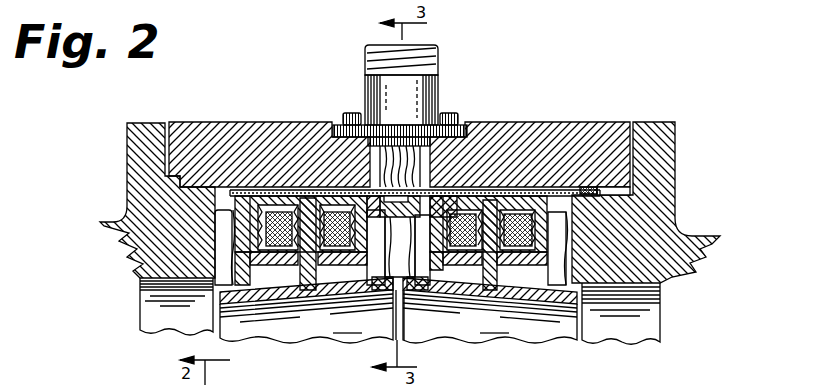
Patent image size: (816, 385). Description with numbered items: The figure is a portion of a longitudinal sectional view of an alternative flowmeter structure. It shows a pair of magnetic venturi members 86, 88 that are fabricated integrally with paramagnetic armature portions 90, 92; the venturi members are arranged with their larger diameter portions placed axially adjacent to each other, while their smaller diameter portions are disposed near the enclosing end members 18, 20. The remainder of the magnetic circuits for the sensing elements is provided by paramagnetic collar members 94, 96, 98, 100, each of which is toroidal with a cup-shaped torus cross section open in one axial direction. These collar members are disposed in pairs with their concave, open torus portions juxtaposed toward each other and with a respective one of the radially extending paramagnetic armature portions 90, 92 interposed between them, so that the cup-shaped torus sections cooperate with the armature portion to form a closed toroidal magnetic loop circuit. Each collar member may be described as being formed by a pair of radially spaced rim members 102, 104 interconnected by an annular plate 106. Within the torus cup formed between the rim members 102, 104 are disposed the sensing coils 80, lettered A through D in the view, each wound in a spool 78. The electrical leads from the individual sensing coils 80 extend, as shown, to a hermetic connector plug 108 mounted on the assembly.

The end member 18 is at (146, 122).
The end member 20 is at (676, 152).
The spool 78 is at (540, 265).
The sensing coil 80 is at (468, 265).
The magnetic venturi member 86 is at (306, 310).
The magnetic venturi member 88 is at (490, 310).
The paramagnetic armature portion 90 is at (308, 190).
The paramagnetic armature portion 92 is at (517, 194).
The paramagnetic collar member 94 is at (262, 193).
The paramagnetic collar member 96 is at (378, 186).
The paramagnetic collar member 98 is at (466, 194).
The paramagnetic collar member 100 is at (542, 188).
The rim member 102 is at (258, 195).
The rim member 104 is at (250, 263).
The annular plate 106 is at (225, 270).
The hermetic connector plug 108 is at (440, 82).